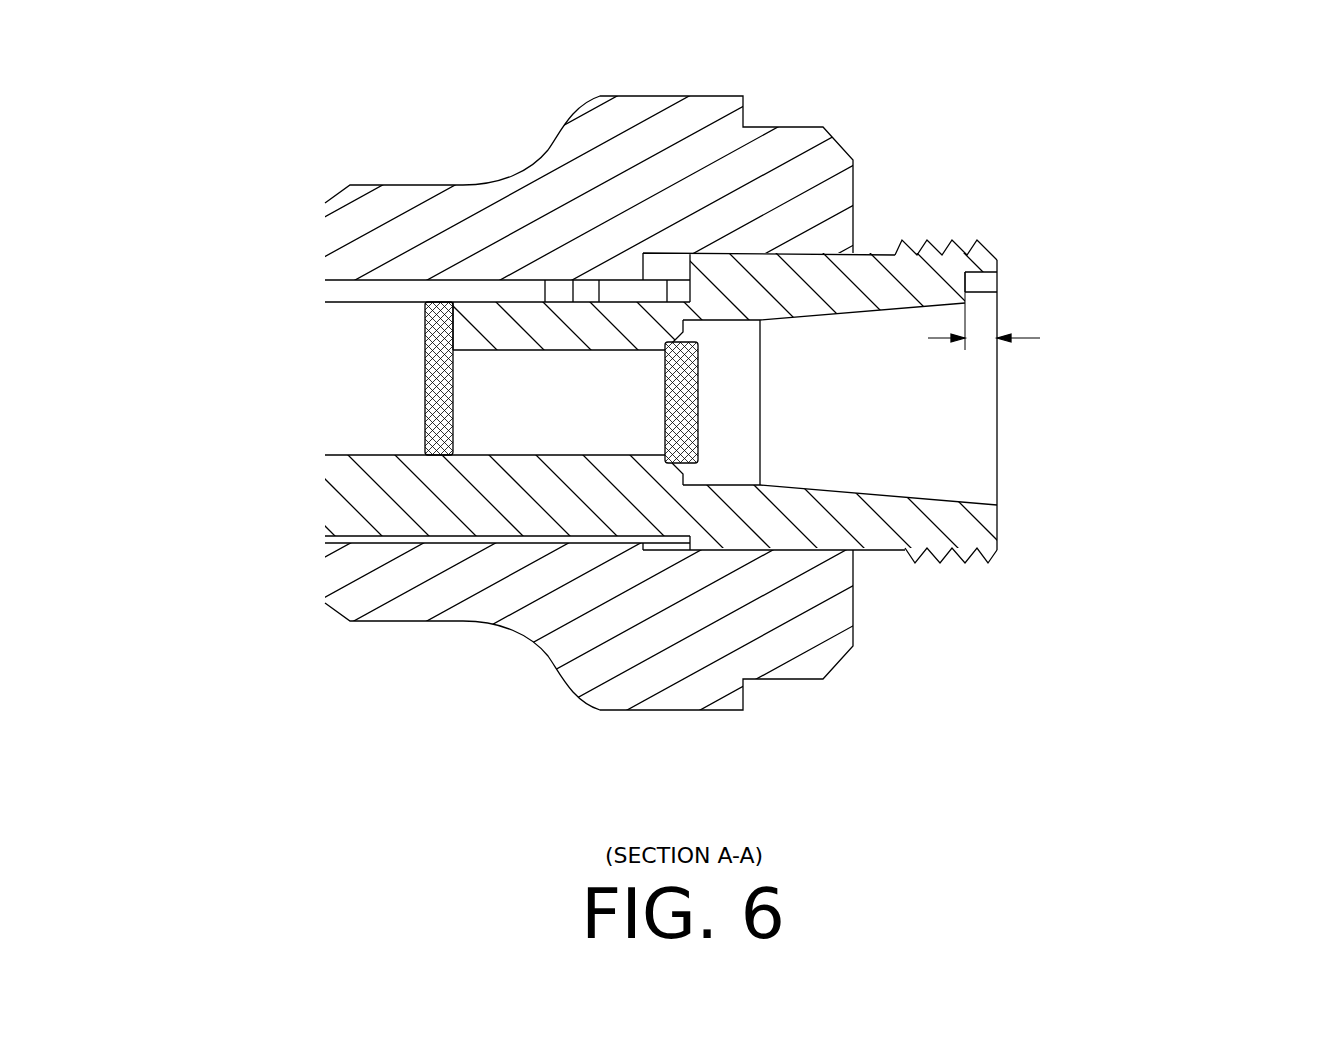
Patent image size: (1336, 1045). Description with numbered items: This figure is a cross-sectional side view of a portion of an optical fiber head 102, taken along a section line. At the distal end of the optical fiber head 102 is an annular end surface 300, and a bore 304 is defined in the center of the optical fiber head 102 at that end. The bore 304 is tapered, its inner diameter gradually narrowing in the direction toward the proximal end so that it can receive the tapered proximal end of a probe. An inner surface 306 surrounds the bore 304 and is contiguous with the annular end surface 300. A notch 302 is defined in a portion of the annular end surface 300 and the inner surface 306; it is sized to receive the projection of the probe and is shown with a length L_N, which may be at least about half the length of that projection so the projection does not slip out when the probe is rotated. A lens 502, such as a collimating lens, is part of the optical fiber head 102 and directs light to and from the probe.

The optical fiber head 102 is at (297, 115).
The annular end surface 300 is at (1002, 523).
The notch 302 is at (1000, 272).
The bore 304 is at (972, 407).
The inner surface 306 is at (953, 502).
The lens 502 is at (665, 403).